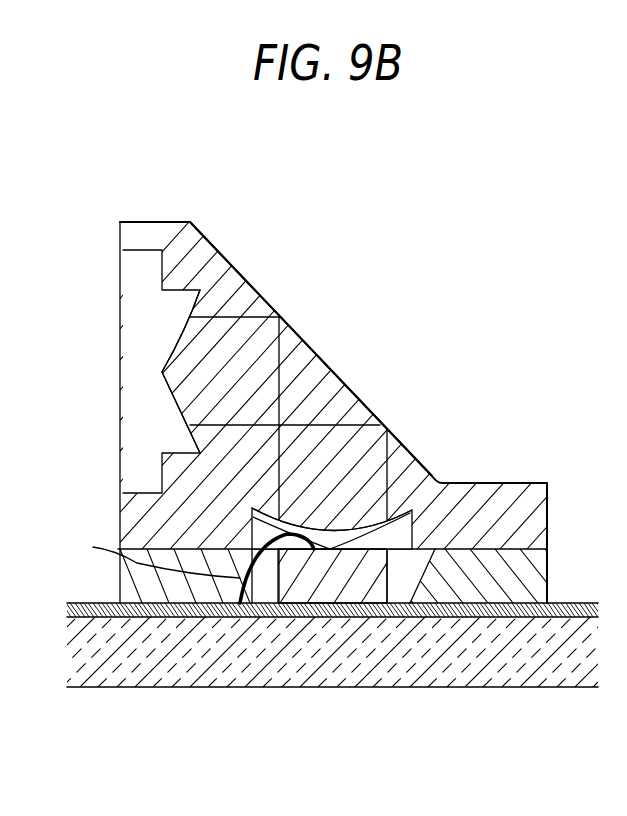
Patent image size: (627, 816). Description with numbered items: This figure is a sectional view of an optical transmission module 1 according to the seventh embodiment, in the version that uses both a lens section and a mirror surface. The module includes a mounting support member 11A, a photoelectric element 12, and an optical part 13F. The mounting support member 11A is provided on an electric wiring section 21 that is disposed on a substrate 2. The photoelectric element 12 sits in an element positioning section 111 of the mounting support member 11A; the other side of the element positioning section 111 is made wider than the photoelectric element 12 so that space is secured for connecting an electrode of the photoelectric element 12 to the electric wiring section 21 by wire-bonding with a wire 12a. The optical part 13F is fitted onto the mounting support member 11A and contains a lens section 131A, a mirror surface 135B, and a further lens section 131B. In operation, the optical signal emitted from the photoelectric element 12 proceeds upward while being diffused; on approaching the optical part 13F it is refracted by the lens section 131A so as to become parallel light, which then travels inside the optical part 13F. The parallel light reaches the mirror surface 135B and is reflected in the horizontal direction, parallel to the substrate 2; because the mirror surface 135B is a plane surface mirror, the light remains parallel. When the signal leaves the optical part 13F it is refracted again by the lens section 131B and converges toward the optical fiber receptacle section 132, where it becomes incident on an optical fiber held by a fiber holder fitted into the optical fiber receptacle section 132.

The optical transmission module 1 is at (415, 245).
The substrate 2 is at (92, 647).
The electric wiring section 21 is at (170, 617).
The mounting support member 11A is at (543, 482).
The element positioning section 111 is at (402, 583).
The photoelectric element 12 is at (335, 577).
The wire 12a is at (183, 566).
The optical part 13F is at (217, 275).
The lens section 131A is at (388, 465).
The lens section 131B is at (186, 350).
The optical fiber receptacle section 132 is at (137, 325).
The mirror surface 135B is at (338, 370).